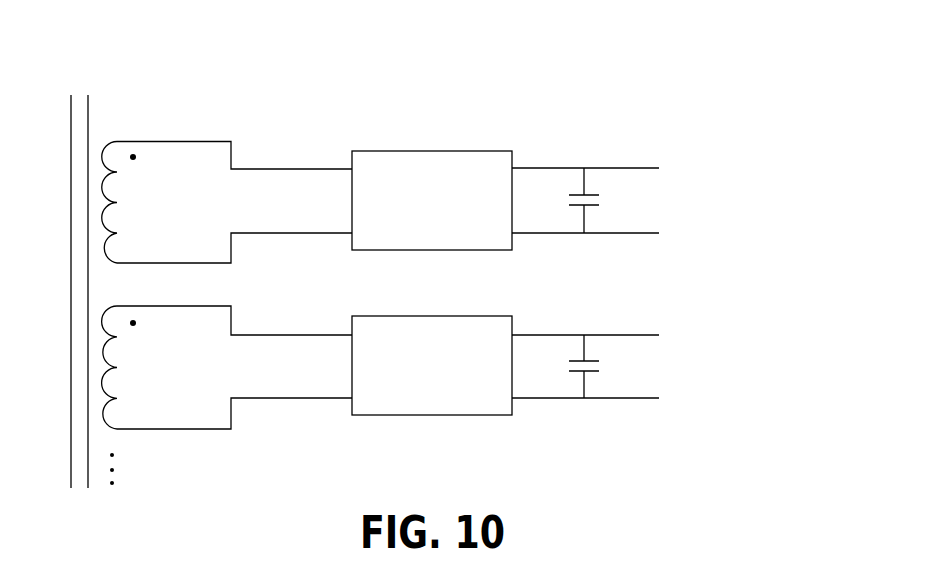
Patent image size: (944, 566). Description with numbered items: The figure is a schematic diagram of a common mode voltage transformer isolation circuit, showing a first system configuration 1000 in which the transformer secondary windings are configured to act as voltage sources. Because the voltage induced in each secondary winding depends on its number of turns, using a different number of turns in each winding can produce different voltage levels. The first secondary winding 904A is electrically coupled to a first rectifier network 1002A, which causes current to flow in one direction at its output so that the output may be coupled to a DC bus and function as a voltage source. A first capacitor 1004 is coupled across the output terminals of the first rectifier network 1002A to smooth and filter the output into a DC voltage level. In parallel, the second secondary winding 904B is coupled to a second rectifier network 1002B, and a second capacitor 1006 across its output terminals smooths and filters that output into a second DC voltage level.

The first system configuration 1000 is at (697, 48).
The first secondary winding 904A is at (102, 147).
The second secondary winding 904B is at (103, 430).
The first rectifier network 1002A is at (398, 151).
The second rectifier network 1002B is at (398, 316).
The first capacitor 1004 is at (593, 193).
The second capacitor 1006 is at (593, 360).